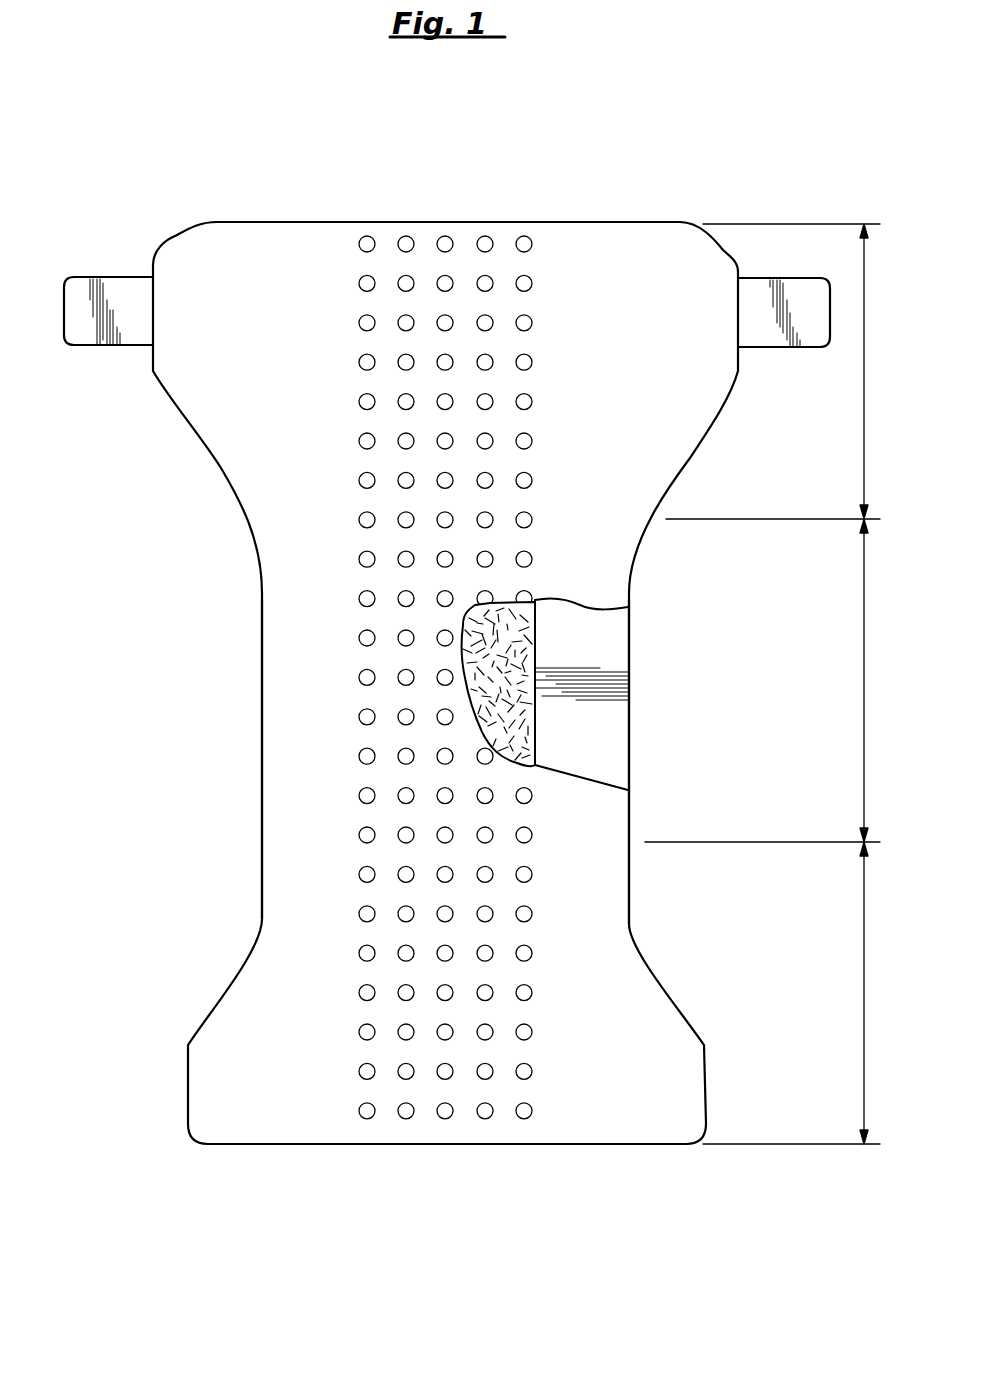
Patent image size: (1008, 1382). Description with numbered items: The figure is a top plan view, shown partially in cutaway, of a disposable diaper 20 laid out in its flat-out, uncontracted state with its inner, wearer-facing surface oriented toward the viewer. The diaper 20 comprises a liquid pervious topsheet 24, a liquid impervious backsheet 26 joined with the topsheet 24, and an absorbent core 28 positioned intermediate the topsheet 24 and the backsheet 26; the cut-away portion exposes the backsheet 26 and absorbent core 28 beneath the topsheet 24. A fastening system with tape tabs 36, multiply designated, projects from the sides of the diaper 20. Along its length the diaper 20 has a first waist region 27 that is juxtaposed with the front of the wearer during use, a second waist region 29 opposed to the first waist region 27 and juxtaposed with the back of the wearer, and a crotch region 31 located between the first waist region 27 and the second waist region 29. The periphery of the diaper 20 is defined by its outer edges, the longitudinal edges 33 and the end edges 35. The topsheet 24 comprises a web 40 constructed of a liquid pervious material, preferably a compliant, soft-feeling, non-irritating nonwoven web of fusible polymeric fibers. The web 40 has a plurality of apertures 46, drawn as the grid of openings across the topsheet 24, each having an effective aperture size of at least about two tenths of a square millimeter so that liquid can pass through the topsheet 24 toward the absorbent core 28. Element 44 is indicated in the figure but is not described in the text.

The diaper 20 is at (752, 200).
The topsheet 24 is at (600, 552).
The backsheet 26 is at (598, 667).
The absorbent core 28 is at (518, 720).
The first waist region 27 is at (804, 993).
The second waist region 29 is at (788, 371).
The crotch region 31 is at (779, 680).
The longitudinal edges 33 is at (262, 868).
The end edges 35 is at (333, 222).
The tape tabs 36 is at (118, 293).
The web 40 is at (537, 310).
The outer cover 44 is at (269, 240).
The apertures 46 is at (524, 243).